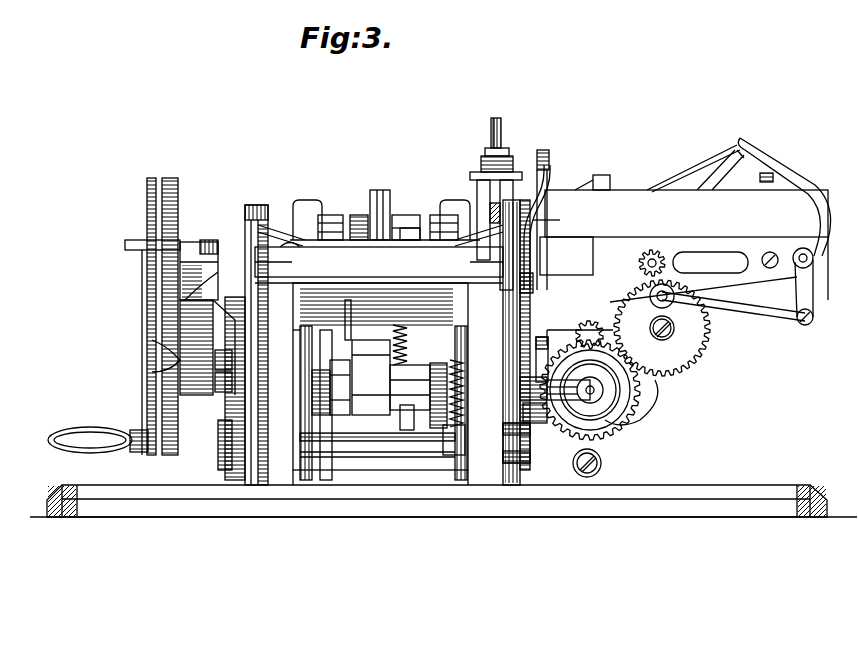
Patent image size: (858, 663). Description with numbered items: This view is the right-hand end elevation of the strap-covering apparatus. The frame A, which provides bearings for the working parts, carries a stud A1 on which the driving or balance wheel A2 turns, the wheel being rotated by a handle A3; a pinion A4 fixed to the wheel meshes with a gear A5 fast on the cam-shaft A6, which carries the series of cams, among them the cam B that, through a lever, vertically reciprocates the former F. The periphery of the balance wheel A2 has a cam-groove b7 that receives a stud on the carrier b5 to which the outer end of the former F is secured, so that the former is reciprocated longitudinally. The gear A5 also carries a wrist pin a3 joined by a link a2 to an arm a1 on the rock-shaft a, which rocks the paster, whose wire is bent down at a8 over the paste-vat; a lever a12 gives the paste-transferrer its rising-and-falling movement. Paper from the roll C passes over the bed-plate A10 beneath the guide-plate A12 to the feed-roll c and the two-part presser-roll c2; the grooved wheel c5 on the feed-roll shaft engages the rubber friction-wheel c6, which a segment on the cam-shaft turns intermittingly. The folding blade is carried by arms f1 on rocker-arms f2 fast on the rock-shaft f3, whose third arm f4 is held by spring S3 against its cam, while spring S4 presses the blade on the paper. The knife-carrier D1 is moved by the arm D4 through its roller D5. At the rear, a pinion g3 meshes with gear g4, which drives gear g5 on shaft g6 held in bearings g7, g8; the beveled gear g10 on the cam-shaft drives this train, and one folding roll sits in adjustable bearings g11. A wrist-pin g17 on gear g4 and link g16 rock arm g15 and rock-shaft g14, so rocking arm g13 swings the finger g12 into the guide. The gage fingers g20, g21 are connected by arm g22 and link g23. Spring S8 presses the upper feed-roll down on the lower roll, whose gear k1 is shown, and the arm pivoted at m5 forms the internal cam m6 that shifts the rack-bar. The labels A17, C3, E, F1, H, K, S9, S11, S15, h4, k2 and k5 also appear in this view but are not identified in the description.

The frame A is at (246, 470).
The stud A1 is at (220, 300).
The driving or balance wheel A2 is at (172, 178).
The handle A3 is at (88, 430).
The pinion A4 is at (661, 495).
The gear A5 is at (236, 395).
The shaft A6 is at (340, 370).
The bed plate A10 is at (436, 268).
The guide-plate A12 is at (379, 261).
The upright A17 is at (520, 357).
The cam B is at (242, 422).
The roll of paper C is at (380, 384).
The plate C3 is at (310, 264).
The knife-carrier D1 is at (390, 462).
The arm D4 is at (400, 330).
The roller or stud D5 is at (348, 330).
The plate E is at (228, 240).
The former F is at (410, 382).
The post F1 is at (406, 418).
The bracket H is at (542, 337).
The post assembly K is at (482, 190).
The spring S3 is at (523, 412).
The spring S4 is at (360, 214).
The spring S8 is at (494, 172).
The block S9 is at (406, 211).
The spring S11 is at (462, 346).
The spring S15 is at (408, 332).
The rock-shaft a is at (770, 280).
The arm a1 is at (220, 447).
The link a2 is at (218, 393).
The wrist pin or stud a3 is at (218, 372).
The bent portion of paster wire a8 is at (308, 222).
The lever a12 is at (384, 202).
The carrier b5 is at (210, 242).
The cam-groove b7 is at (160, 322).
The feed-roll c is at (410, 219).
The presser-roll c2 is at (452, 240).
The grooved wheel c5 is at (534, 285).
The friction-wheel c6 is at (520, 336).
The arms f1 is at (280, 225).
The rocker-arms f2 is at (259, 225).
The rock-shaft f3 is at (495, 290).
The third arm f4 is at (504, 440).
The pinion g3 is at (560, 428).
The gear g4 is at (702, 350).
The gear g5 is at (570, 445).
The shaft g6 is at (600, 392).
The bearing g7 is at (590, 330).
The bearing g8 is at (650, 250).
The beveled gear g10 is at (575, 330).
The adjustable bearings g11 is at (712, 257).
The blade or finger g12 is at (702, 178).
The rocking arm g13 is at (765, 150).
The rock-shaft g14 is at (813, 258).
The rocker-arm g15 is at (813, 290).
The link g16 is at (778, 318).
The wrist-pin g17 is at (652, 300).
The gage finger g20 is at (783, 178).
The gage finger g21 is at (585, 175).
The arm g22 is at (729, 168).
The link g23 is at (668, 185).
The rod h4 is at (546, 180).
The gear k1 is at (540, 205).
The bar k2 is at (538, 226).
The pinion k5 is at (520, 389).
The pivot m5 is at (601, 462).
The internal cam m6 is at (638, 402).